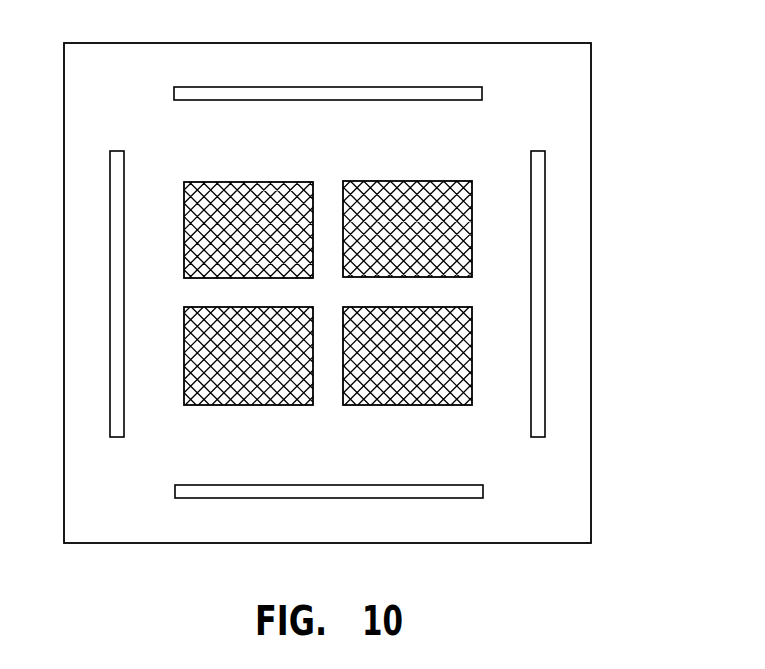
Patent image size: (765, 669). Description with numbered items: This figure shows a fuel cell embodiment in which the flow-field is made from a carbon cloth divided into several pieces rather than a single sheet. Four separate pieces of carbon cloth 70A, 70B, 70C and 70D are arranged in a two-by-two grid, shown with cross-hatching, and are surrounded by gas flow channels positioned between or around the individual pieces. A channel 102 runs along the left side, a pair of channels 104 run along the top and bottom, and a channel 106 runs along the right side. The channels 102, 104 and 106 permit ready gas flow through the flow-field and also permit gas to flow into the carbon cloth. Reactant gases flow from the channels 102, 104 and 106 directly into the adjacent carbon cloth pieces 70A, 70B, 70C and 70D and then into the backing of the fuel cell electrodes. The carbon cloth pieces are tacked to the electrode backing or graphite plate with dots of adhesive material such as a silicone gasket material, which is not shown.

The carbon cloth piece 70A is at (247, 181).
The carbon cloth piece 70B is at (407, 180).
The carbon cloth piece 70C is at (249, 405).
The carbon cloth piece 70D is at (407, 405).
The gas flow channel 102 is at (115, 310).
The gas flow channel 104 is at (365, 92).
The gas flow channel 106 is at (540, 277).